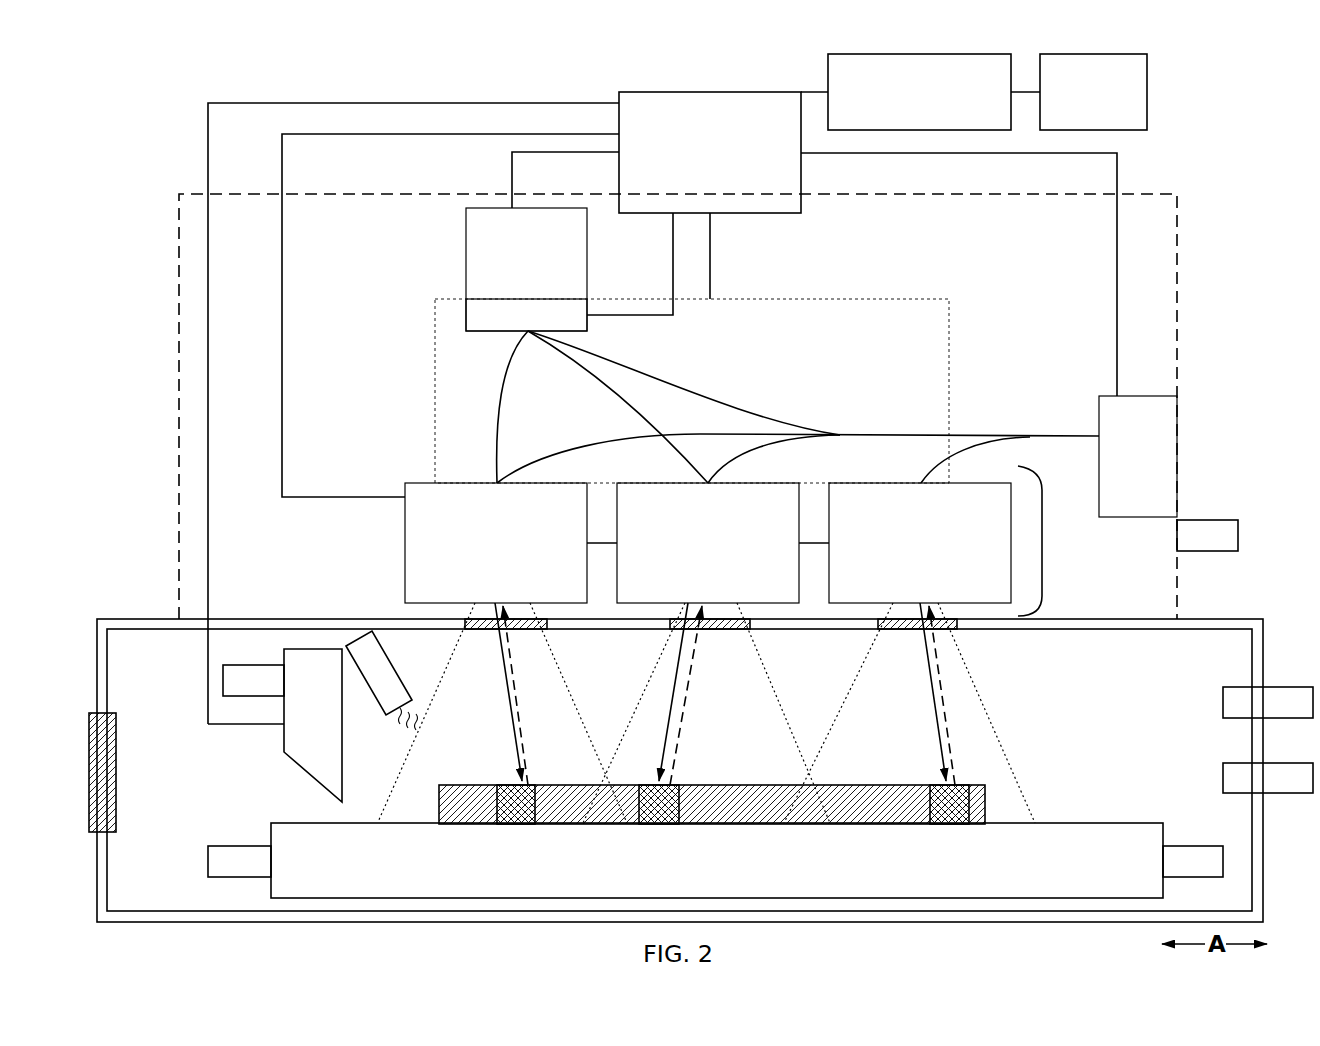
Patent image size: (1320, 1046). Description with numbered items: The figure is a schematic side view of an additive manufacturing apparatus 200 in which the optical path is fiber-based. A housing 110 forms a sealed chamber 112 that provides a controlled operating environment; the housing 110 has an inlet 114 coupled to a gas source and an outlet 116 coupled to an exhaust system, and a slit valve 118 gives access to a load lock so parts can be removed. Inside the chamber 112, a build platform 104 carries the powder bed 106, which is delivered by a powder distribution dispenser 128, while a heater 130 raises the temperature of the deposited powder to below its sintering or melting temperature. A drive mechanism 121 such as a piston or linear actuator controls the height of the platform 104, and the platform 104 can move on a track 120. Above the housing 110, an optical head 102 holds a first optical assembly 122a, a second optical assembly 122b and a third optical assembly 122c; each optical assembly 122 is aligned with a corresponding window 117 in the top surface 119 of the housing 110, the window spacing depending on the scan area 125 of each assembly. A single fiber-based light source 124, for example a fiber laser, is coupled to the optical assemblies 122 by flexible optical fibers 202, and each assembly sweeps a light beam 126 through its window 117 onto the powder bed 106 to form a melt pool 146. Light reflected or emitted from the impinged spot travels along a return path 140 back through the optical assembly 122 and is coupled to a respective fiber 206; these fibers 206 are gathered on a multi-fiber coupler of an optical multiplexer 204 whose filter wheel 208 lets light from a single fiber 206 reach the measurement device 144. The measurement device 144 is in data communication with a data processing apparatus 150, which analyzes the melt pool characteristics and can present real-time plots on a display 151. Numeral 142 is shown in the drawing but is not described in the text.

The additive manufacturing apparatus 200 is at (208, 60).
The optical head 102 is at (1169, 225).
The controller 142 is at (724, 164).
The data processing apparatus 150 is at (934, 104).
The display 151 is at (1108, 104).
The measurement device 144 is at (541, 280).
The filter wheel 208 is at (541, 327).
The optical multiplexer 204 is at (917, 342).
The fiber 206 is at (667, 380).
The flexible optical fiber 202 is at (545, 448).
The optical assembly 122 is at (1042, 543).
The first optical assembly 122a is at (514, 555).
The second optical assembly 122b is at (726, 555).
The third optical assembly 122c is at (938, 555).
The fiber-based light source 124 is at (1152, 468).
The track 120 is at (1198, 518).
The housing 110 is at (1208, 618).
The sealed chamber 112 is at (1246, 659).
The inlet 114 is at (1282, 714).
The outlet 116 is at (1282, 790).
The top surface 119 is at (1115, 628).
The scan area 125 is at (958, 628).
The window 117 is at (963, 651).
The valve 118 is at (116, 730).
The powder distribution dispenser 128 is at (324, 707).
The heater 130 is at (370, 690).
The light beam 126 is at (514, 728).
The return path 140 is at (522, 727).
The powder bed 106 is at (985, 800).
The melt pool 146 is at (519, 824).
The build platform 104 is at (1156, 892).
The drive mechanism 121 is at (1180, 846).